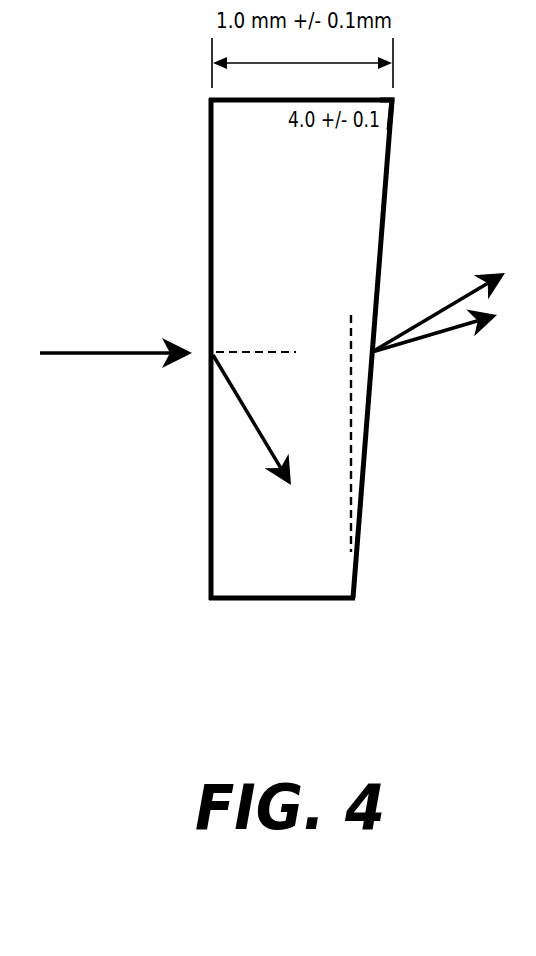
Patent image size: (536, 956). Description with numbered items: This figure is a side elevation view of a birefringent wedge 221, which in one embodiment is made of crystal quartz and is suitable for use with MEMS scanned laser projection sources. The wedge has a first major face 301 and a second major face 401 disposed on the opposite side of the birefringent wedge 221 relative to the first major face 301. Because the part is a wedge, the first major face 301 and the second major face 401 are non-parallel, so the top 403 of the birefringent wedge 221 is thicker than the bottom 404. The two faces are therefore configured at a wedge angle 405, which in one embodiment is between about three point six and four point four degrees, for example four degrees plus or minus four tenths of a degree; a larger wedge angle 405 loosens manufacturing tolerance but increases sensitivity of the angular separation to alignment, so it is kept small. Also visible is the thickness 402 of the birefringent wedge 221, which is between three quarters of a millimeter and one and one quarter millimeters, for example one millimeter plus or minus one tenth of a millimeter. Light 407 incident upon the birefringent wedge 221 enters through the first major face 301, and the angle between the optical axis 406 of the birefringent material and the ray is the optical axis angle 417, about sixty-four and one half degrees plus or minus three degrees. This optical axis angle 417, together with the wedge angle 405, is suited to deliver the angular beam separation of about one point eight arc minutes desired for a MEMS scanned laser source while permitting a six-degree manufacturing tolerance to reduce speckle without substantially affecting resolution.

The birefringent wedge 221 is at (298, 358).
The first major face 301 is at (208, 413).
The second major face 401 is at (381, 253).
The thickness 402 is at (257, 103).
The top 403 is at (394, 101).
The bottom 404 is at (268, 601).
The wedge angle 405 is at (362, 415).
The optical axis 406 is at (252, 428).
The light 407 is at (142, 350).
The optical axis angle 417 is at (260, 388).